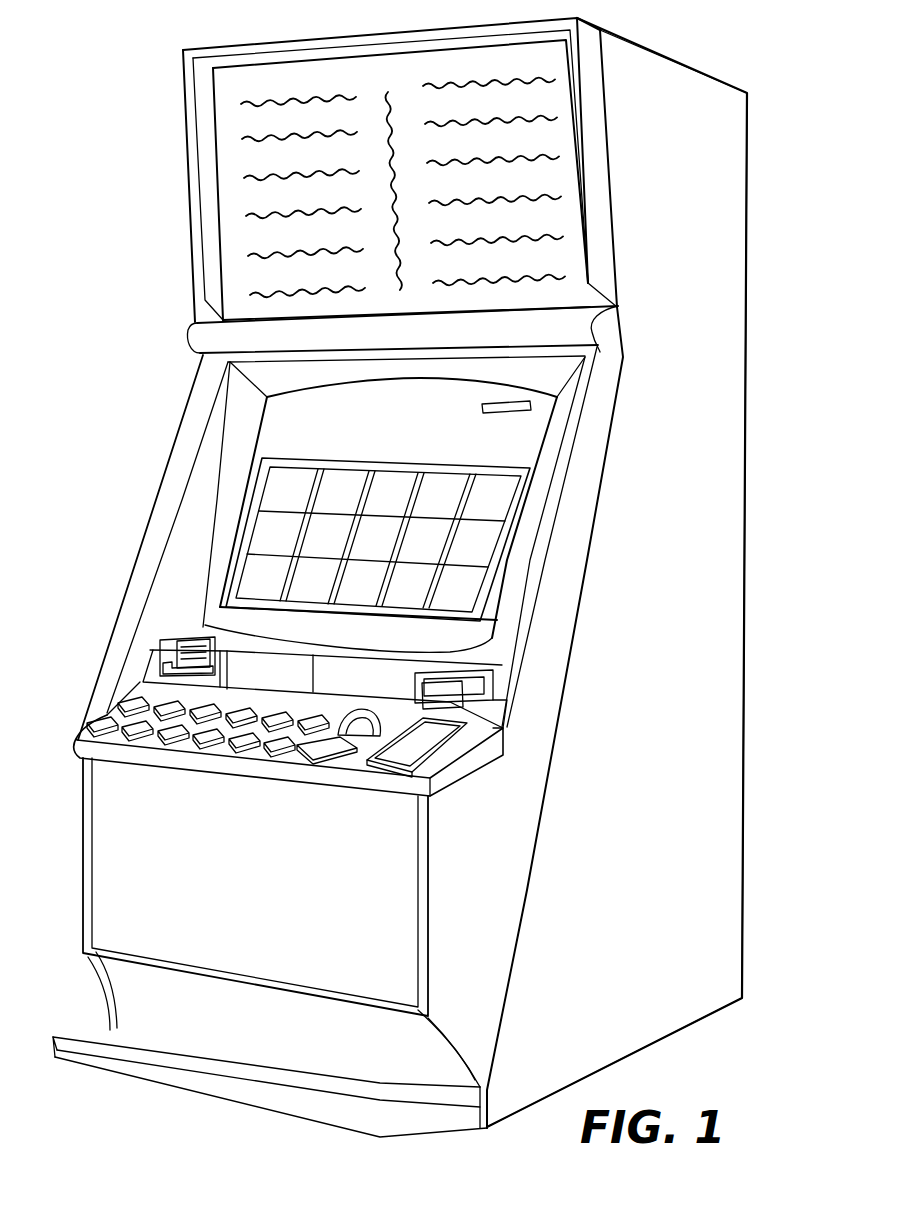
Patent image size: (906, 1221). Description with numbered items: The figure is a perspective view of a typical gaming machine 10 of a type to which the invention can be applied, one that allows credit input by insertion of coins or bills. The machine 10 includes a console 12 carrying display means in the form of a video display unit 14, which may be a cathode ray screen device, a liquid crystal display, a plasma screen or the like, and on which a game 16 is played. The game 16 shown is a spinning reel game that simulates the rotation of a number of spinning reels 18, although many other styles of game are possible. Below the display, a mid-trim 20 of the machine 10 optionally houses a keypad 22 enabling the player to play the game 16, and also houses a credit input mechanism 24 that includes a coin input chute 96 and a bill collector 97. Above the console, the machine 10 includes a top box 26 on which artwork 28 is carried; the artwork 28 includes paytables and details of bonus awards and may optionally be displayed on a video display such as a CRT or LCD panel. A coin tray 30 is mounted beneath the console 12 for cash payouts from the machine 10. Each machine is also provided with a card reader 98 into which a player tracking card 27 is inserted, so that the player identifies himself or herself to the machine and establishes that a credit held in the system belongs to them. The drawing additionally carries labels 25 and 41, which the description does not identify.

The gaming machine 10 is at (735, 70).
The console 12 is at (692, 838).
The video display unit 14 is at (206, 588).
The game 16 is at (232, 542).
The spinning reels 18 is at (398, 457).
The mid-trim 20 is at (73, 735).
The keypad 22 is at (118, 702).
The credit input mechanism 24 is at (492, 733).
The push buttons 25 is at (313, 757).
The top box 26 is at (197, 290).
The player tracking card 27 is at (473, 707).
The artwork 28 is at (258, 146).
The coin tray 30 is at (78, 1018).
The printer housing 41 is at (153, 657).
The coin input chute 96 is at (358, 705).
The bill collector 97 is at (383, 763).
The card reader 98 is at (478, 688).